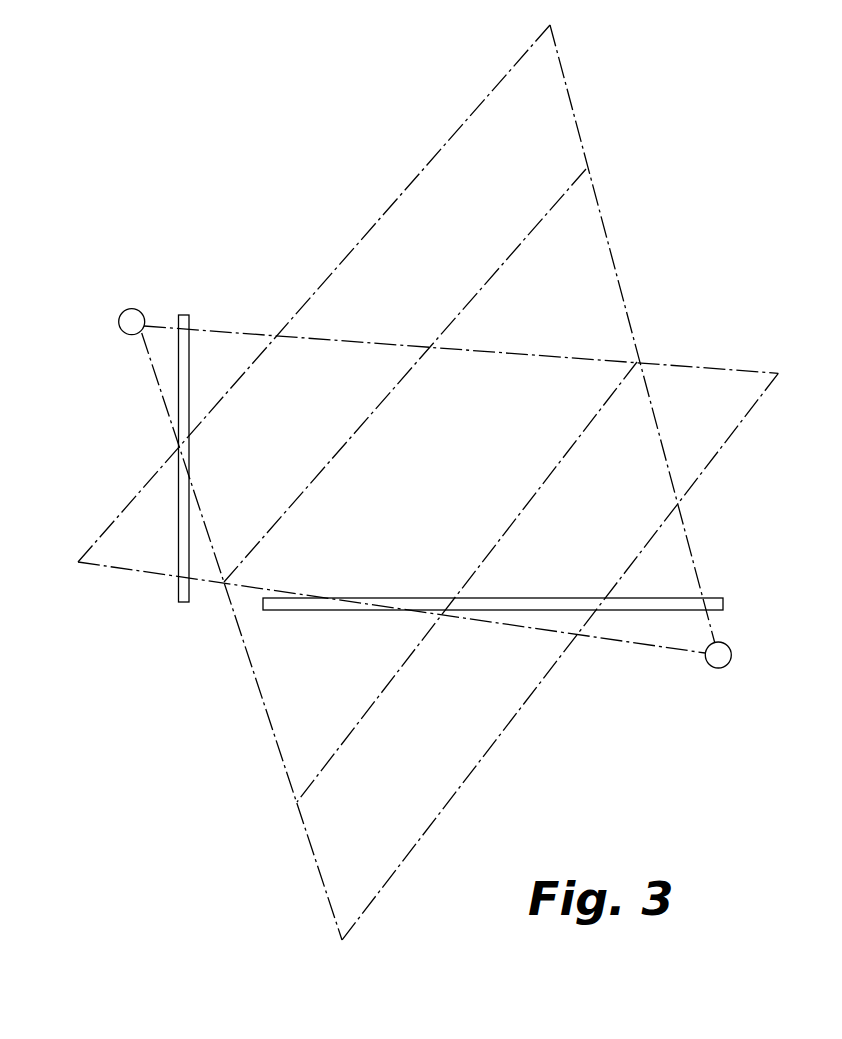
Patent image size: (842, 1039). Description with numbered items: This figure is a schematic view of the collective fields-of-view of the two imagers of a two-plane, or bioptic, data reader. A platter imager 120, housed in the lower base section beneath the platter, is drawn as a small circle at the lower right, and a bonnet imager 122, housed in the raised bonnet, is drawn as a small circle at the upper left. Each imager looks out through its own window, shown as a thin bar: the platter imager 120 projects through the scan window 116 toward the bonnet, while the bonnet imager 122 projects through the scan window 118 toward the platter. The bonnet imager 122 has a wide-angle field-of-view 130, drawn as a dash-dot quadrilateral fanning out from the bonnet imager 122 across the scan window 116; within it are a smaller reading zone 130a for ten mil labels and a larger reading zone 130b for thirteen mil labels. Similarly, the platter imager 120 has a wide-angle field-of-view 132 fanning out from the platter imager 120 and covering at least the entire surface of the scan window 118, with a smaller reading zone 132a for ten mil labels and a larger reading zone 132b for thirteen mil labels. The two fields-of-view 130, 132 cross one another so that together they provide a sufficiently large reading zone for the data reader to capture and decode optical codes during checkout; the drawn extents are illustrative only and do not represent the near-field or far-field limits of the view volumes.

The scan window 116 is at (713, 598).
The scan window 118 is at (190, 323).
The platter imager 120 is at (731, 656).
The bonnet imager 122 is at (120, 324).
The field-of-view 130 is at (664, 344).
The smaller reading zone 130a is at (525, 387).
The larger reading zone 130b is at (717, 388).
The field-of-view 132 is at (424, 119).
The smaller reading zone 132a is at (573, 238).
The larger reading zone 132b is at (538, 85).